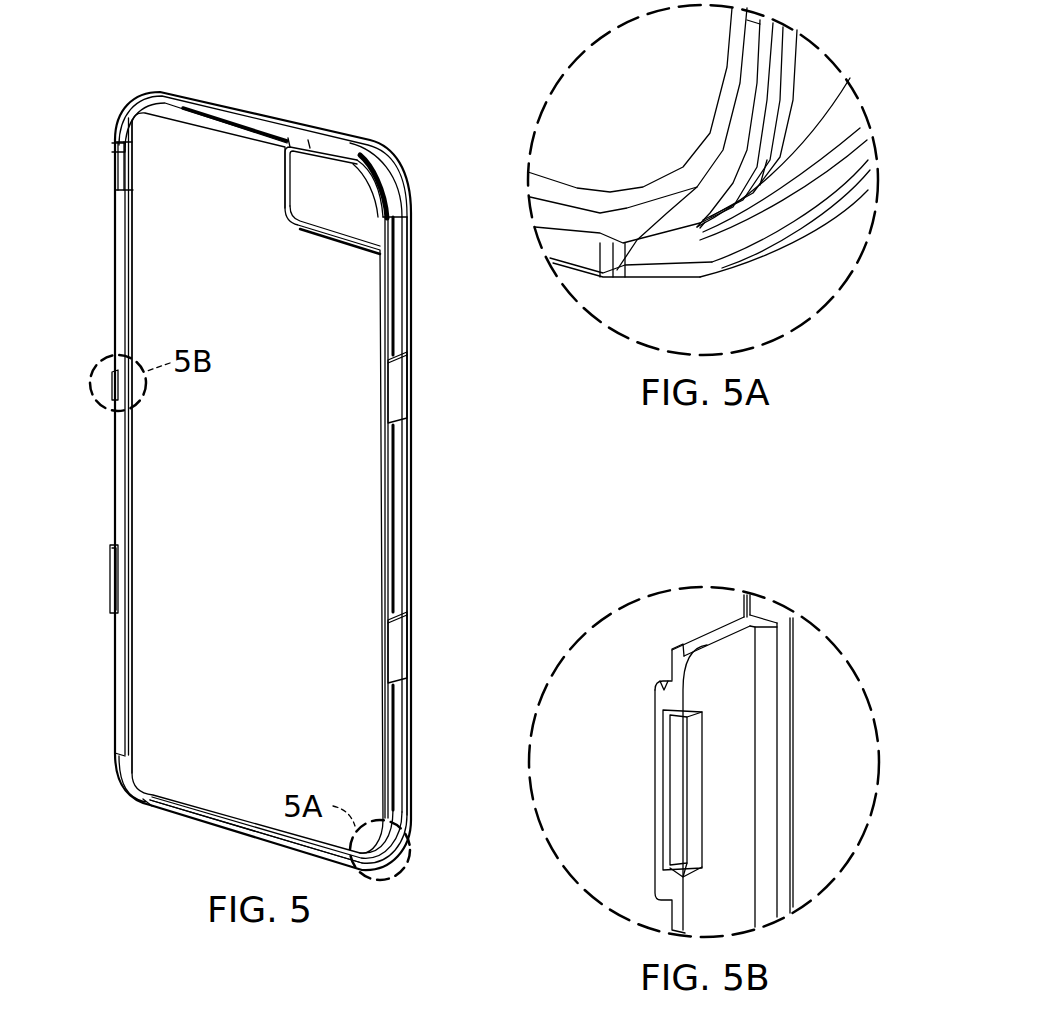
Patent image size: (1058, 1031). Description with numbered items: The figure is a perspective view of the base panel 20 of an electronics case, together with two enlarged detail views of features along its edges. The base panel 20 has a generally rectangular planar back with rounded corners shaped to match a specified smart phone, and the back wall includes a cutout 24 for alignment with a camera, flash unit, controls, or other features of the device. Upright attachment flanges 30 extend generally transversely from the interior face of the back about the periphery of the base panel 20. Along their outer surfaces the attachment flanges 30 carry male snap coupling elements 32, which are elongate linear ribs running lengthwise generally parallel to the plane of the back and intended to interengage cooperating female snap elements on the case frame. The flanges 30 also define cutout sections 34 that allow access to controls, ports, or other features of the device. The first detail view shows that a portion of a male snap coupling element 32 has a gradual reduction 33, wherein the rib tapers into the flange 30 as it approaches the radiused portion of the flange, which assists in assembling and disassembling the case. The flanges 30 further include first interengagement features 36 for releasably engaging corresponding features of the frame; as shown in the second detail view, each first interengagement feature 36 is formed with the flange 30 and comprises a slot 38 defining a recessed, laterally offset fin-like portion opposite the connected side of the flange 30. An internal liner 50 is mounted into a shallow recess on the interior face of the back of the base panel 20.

In FIG. 5, the base panel 20 is at (395, 96).
In FIG. 5, the cutout 24 is at (334, 210).
In FIG. 5, the attachment flange 30 is at (130, 498).
In FIG. 5, the male snap coupling element 32 is at (394, 463).
In FIG. 5A, the male snap coupling element 32 is at (797, 62).
In FIG. 5A, the gradual reduction 33 is at (720, 232).
In FIG. 5, the cutout section 34 is at (116, 190).
In FIG. 5, the first interengagement feature 36 is at (381, 388).
In FIG. 5B, the first interengagement feature 36 is at (645, 752).
In FIG. 5B, the slot 38 is at (688, 805).
In FIG. 5, the internal liner 50 is at (262, 493).